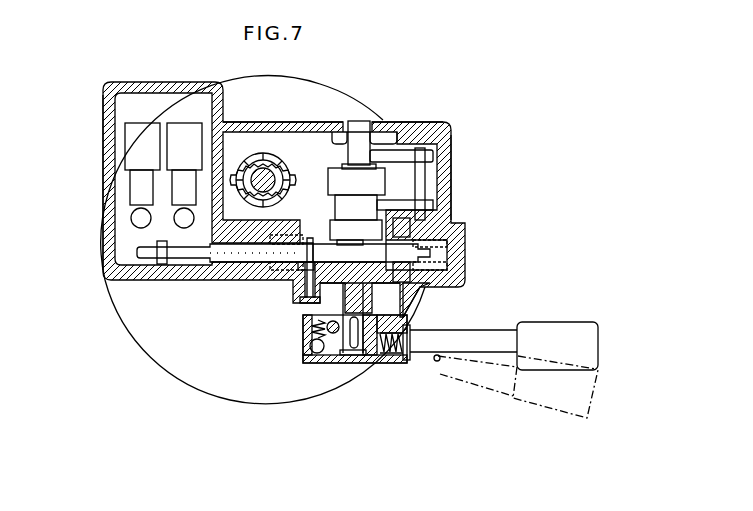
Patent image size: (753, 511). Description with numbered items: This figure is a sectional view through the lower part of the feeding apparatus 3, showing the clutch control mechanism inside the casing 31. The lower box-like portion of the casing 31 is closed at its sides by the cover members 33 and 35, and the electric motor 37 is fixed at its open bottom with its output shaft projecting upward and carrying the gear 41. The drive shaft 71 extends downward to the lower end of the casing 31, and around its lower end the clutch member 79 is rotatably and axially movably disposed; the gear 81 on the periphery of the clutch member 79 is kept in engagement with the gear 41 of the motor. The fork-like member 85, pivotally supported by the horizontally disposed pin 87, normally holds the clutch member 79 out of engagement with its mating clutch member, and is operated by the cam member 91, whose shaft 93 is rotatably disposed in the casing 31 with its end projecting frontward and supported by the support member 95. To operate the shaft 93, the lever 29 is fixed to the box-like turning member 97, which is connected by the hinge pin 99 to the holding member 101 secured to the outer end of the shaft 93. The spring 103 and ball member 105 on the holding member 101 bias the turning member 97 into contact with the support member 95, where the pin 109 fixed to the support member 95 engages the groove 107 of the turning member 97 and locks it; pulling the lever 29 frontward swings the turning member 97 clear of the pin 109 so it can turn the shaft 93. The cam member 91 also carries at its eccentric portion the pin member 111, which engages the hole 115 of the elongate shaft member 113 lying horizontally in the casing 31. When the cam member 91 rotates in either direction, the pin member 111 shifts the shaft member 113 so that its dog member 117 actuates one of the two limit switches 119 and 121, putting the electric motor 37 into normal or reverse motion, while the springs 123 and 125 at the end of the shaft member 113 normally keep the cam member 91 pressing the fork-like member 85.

The feeding apparatus 3 is at (418, 97).
The lever 29 is at (506, 330).
The casing 31 is at (216, 83).
The cover member 33 is at (452, 125).
The cover member 35 is at (107, 130).
The electric motor 37 is at (116, 306).
The gear 41 is at (233, 225).
The drive shaft 71 is at (326, 166).
The clutch member 79 is at (265, 166).
The gear 81 is at (250, 148).
The fork-like member 85 is at (340, 138).
The pin 87 is at (425, 180).
The cam member 91 is at (345, 186).
The shaft 93 is at (412, 300).
The support member 95 is at (298, 297).
The turning member 97 is at (392, 364).
The hinge pin 99 is at (333, 336).
The holding member 101 is at (368, 364).
The spring 103 is at (307, 337).
The ball member 105 is at (312, 352).
The groove 107 is at (416, 361).
The pin 109 is at (436, 366).
The pin member 111 is at (435, 205).
The shaft member 113 is at (244, 260).
The hole 115 is at (340, 242).
The dog member 117 is at (165, 264).
The limit switch 119 is at (135, 160).
The limit switch 121 is at (180, 153).
The spring 123 is at (263, 270).
The spring 125 is at (466, 262).